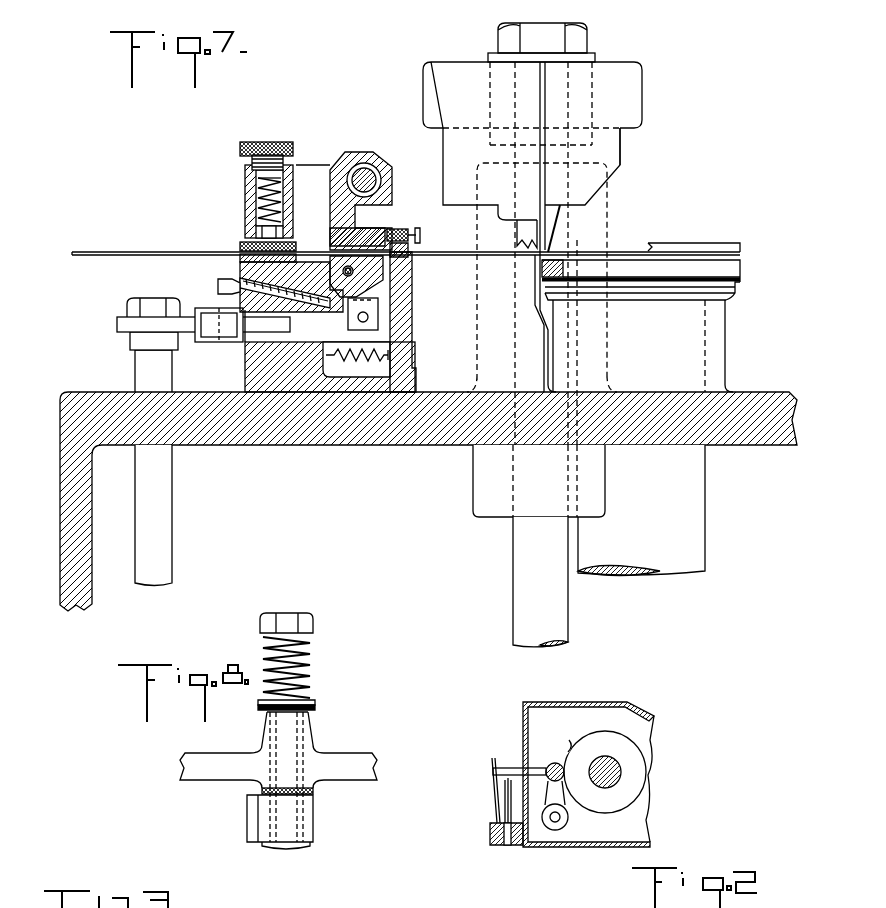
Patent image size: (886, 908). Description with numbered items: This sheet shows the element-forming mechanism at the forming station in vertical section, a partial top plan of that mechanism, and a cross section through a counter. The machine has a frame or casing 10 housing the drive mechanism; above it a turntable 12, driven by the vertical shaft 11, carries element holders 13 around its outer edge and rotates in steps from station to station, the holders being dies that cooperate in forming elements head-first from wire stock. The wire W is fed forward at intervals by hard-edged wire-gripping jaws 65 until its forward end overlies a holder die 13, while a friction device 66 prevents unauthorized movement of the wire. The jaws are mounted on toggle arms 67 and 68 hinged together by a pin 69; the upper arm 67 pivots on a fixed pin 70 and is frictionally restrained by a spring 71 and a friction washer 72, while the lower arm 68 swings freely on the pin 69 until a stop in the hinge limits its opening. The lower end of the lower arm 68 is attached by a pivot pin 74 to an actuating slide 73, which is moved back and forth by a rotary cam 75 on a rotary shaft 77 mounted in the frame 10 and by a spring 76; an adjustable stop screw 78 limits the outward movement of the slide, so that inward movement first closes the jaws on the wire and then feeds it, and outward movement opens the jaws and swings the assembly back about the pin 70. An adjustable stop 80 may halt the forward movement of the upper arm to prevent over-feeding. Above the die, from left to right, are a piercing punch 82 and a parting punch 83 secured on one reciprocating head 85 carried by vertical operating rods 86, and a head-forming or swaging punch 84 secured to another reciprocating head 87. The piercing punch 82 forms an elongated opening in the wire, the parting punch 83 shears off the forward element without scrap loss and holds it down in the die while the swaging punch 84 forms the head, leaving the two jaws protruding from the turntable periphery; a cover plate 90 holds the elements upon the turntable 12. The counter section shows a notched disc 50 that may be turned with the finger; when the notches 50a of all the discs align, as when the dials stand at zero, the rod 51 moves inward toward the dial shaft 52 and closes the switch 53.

In FIG. 7, the frame or casing 10 is at (59, 526).
In FIG. 7, the vertical shaft 11 is at (680, 514).
In FIG. 7, the turntable 12 is at (727, 266).
In FIG. 7, the element holder 13 is at (552, 258).
In FIG. 2, the notched disc 50 is at (626, 751).
In FIG. 2, the notch 50a is at (570, 746).
In FIG. 2, the rod 51 is at (549, 765).
In FIG. 2, the dial shaft 52 is at (623, 771).
In FIG. 2, the switch 53 is at (485, 815).
In FIG. 7, the wire-gripping jaws 65 is at (380, 232).
In FIG. 7, the friction device 66 is at (243, 240).
In FIG. 7, the upper toggle arm 67 is at (330, 215).
In FIG. 8, the upper toggle arm 67 is at (246, 819).
In FIG. 7, the lower toggle arm 68 is at (413, 284).
In FIG. 7, the pin 69 is at (331, 268).
In FIG. 7, the fixed pin 70 is at (368, 170).
In FIG. 8, the fixed pin 70 is at (270, 848).
In FIG. 8, the spring 71 is at (308, 661).
In FIG. 8, the friction washer 72 is at (314, 791).
In FIG. 7, the actuating slide 73 is at (250, 346).
In FIG. 7, the pivot pin 74 is at (369, 317).
In FIG. 7, the rotary cam 75 is at (116, 323).
In FIG. 8, the rotary cam 75 is at (278, 771).
In FIG. 7, the spring 76 is at (350, 362).
In FIG. 7, the rotary shaft 77 is at (155, 488).
In FIG. 7, the adjustable stop screw 78 is at (216, 277).
In FIG. 7, the adjustable stop 80 is at (421, 235).
In FIG. 7, the piercing punch 82 is at (525, 252).
In FIG. 7, the parting punch 83 is at (546, 254).
In FIG. 7, the head-forming or swaging punch 84 is at (558, 248).
In FIG. 7, the reciprocating head 85 is at (438, 77).
In FIG. 7, the vertical operating rods 86 is at (522, 550).
In FIG. 7, the reciprocating head 87 is at (635, 89).
In FIG. 7, the cover plate 90 is at (718, 248).
In FIG. 7, the wire W is at (133, 251).